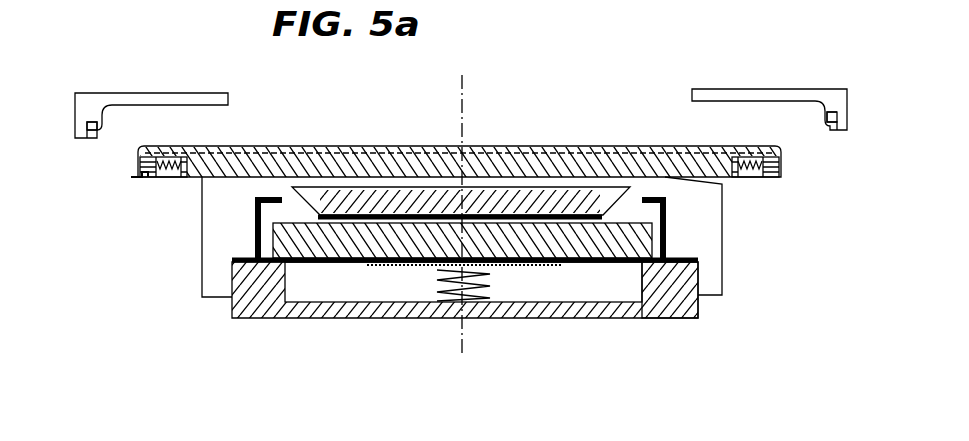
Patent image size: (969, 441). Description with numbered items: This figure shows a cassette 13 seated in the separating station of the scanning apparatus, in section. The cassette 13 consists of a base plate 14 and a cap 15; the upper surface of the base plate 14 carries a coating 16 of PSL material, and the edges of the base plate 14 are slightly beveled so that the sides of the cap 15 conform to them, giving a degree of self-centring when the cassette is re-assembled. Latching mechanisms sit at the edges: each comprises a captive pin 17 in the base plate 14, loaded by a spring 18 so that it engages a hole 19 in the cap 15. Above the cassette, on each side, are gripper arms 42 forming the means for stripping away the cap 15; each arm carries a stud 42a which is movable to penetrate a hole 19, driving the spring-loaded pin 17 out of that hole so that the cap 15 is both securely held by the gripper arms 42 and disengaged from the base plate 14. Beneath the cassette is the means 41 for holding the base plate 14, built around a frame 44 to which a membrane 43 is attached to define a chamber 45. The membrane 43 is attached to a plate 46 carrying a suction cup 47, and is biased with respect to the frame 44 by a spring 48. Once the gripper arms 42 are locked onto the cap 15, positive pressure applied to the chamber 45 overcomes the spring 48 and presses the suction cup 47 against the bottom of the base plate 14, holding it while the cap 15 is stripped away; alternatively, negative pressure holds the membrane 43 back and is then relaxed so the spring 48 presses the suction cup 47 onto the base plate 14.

The cassette 13 is at (125, 167).
The base plate 14 is at (733, 186).
The cap 15 is at (533, 141).
The coating 16 is at (342, 157).
The captive pin 17 is at (154, 178).
The spring 18 is at (746, 178).
The hole 19 is at (134, 175).
The means for holding the base plate 41 is at (230, 322).
The gripper arms 42 is at (192, 94).
The studs 42a is at (103, 112).
The membrane 43 is at (590, 262).
The frame 44 is at (648, 320).
The chamber 45 is at (352, 298).
The plate 46 is at (257, 244).
The suction cup 47 is at (292, 187).
The spring 48 is at (478, 298).